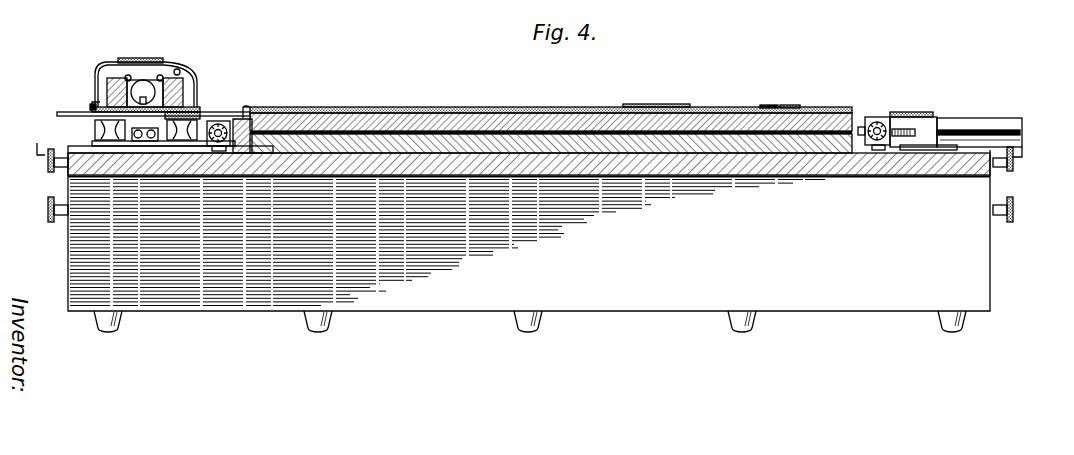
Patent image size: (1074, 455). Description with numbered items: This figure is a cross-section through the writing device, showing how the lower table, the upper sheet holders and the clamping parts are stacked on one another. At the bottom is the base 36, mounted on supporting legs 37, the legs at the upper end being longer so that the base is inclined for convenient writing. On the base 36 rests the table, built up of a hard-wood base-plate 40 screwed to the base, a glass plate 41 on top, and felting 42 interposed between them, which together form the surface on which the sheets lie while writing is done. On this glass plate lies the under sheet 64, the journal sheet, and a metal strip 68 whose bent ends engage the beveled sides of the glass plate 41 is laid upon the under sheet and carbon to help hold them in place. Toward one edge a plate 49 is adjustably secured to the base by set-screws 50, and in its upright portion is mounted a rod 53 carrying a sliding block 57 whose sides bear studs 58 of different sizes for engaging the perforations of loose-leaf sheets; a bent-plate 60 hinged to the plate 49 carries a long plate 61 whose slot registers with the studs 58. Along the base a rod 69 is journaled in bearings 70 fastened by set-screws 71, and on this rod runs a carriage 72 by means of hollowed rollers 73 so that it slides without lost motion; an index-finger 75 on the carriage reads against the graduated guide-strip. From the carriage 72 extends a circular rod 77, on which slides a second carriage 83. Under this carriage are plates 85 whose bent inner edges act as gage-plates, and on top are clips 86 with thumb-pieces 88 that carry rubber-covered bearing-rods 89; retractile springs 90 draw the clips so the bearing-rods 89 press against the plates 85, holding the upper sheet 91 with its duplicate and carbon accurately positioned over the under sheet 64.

The base 36 is at (620, 160).
The supporting legs 37 is at (473, 295).
The base-plate 40 is at (552, 145).
The glass plate 41 is at (523, 123).
The felting 42 is at (463, 136).
The plate 49 is at (937, 150).
The set-screws 50 is at (903, 143).
The rods 53 is at (870, 141).
The blocks 57 is at (240, 142).
The studs 58 is at (877, 116).
The bent-plate 60 is at (927, 125).
The long plate 61 is at (175, 148).
The under sheet 64 is at (798, 107).
The metal strip 68 is at (770, 106).
The rod 69 is at (957, 122).
The bearings 70 is at (1023, 118).
The set-screws 71 is at (1013, 167).
The carriage 72 is at (125, 146).
The rollers 73 is at (110, 132).
The index-finger 75 is at (147, 140).
The rod 77 is at (187, 100).
The carriage 83 is at (95, 101).
The plates 85 is at (283, 107).
The clips 86 is at (97, 80).
The thumb-pieces 88 is at (143, 58).
The bearing-rods 89 is at (243, 106).
The retractile springs 90 is at (180, 69).
The upper sheet 91 is at (672, 106).